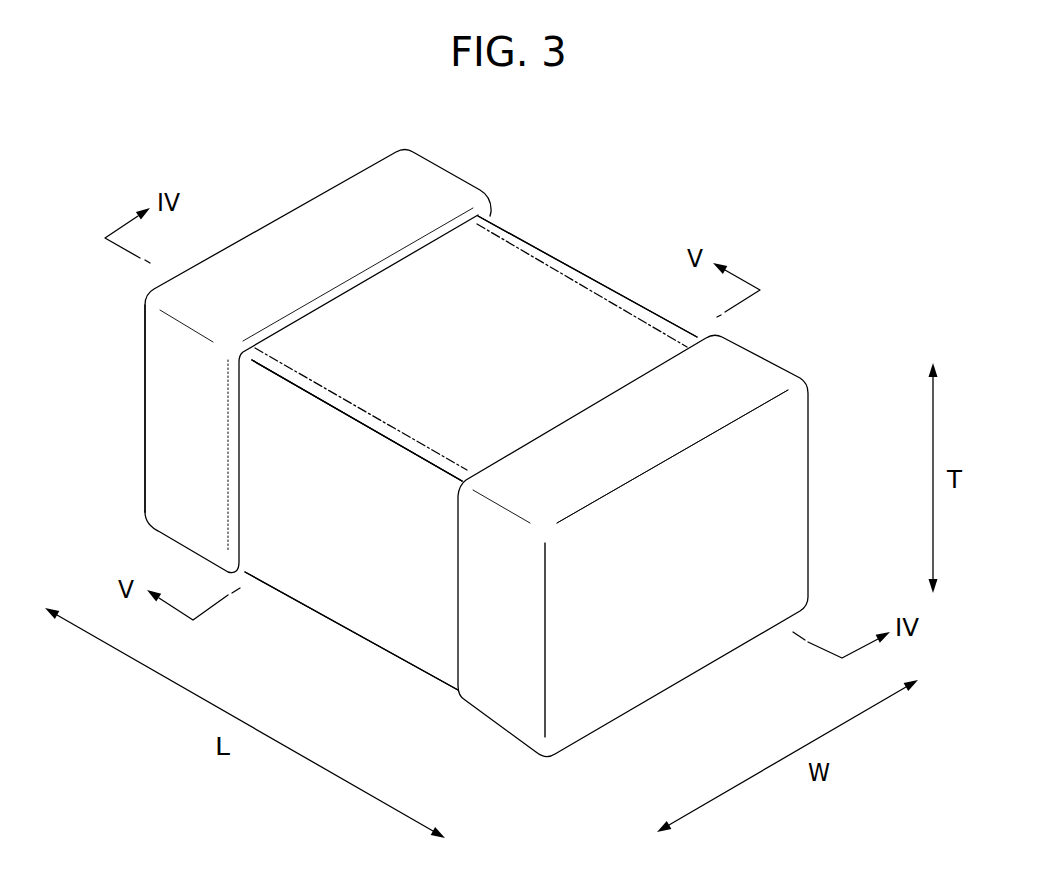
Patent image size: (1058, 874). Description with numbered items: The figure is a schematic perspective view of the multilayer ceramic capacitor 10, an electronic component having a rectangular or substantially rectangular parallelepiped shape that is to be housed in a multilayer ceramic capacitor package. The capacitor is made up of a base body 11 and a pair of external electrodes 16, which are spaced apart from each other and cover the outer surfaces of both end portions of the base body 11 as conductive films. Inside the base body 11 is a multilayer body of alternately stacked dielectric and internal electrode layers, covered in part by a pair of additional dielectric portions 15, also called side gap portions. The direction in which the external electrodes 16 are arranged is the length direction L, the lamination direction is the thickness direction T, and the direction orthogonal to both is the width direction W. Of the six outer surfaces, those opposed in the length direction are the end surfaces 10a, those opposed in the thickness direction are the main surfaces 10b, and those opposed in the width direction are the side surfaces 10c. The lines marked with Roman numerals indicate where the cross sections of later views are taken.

The multilayer ceramic capacitor 10 is at (474, 424).
The base body 11 is at (387, 307).
The additional dielectric portion 15 is at (557, 270).
The external electrode 16 is at (412, 182).
The end surface 10a is at (183, 414).
The main surface 10b is at (502, 258).
The side surface 10c is at (576, 300).